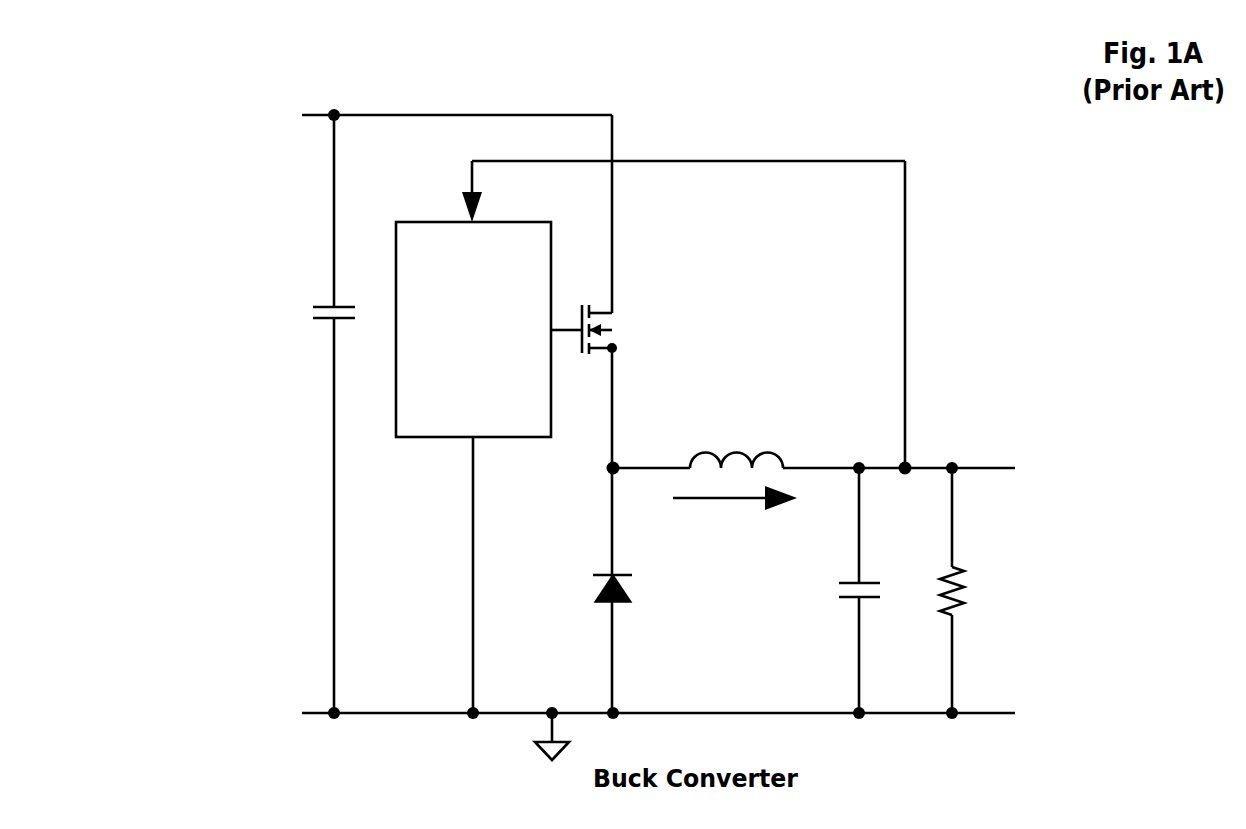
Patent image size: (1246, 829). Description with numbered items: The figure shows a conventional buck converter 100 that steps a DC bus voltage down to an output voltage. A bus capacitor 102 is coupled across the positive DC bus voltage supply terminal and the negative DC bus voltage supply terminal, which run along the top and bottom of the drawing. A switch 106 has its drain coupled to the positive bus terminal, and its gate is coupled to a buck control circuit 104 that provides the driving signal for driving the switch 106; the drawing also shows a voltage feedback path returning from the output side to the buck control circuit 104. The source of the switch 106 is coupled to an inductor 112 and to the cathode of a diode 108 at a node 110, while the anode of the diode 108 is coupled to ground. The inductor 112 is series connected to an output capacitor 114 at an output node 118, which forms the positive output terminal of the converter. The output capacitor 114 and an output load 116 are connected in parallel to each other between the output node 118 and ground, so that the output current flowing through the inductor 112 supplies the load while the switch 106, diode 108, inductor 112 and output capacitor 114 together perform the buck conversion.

The conventional buck converter 100 is at (946, 136).
The bus capacitor 102 is at (299, 414).
The buck control circuit 104 is at (473, 329).
The switch 106 is at (615, 326).
The diode 108 is at (590, 592).
The node 110 is at (601, 470).
The inductor 112 is at (736, 426).
The output capacitor 114 is at (814, 590).
The output load 116 is at (983, 590).
The output node 118 is at (908, 462).